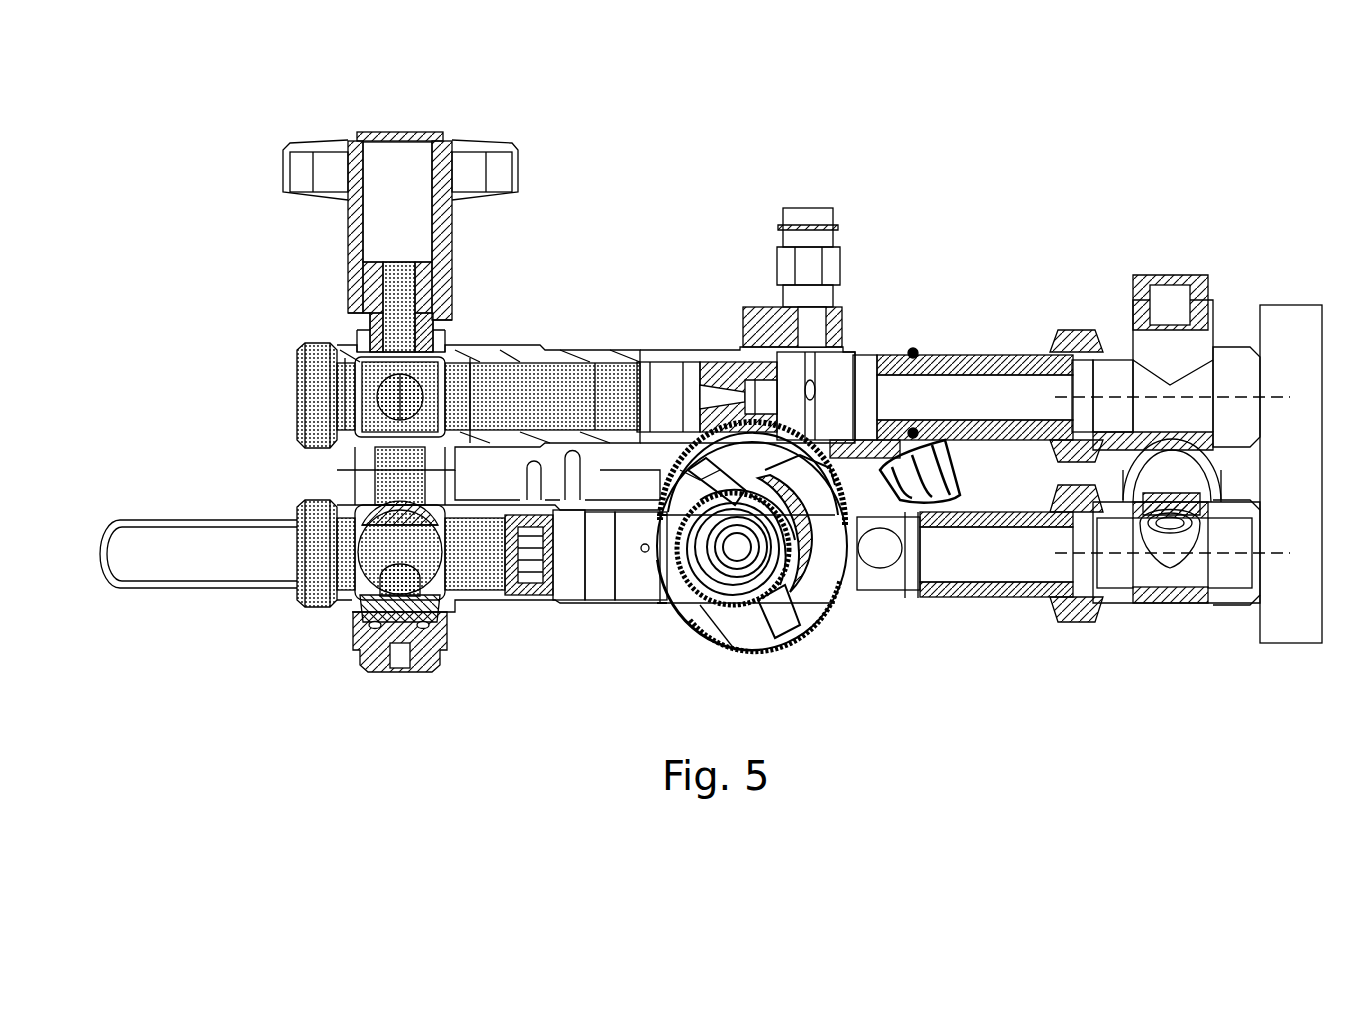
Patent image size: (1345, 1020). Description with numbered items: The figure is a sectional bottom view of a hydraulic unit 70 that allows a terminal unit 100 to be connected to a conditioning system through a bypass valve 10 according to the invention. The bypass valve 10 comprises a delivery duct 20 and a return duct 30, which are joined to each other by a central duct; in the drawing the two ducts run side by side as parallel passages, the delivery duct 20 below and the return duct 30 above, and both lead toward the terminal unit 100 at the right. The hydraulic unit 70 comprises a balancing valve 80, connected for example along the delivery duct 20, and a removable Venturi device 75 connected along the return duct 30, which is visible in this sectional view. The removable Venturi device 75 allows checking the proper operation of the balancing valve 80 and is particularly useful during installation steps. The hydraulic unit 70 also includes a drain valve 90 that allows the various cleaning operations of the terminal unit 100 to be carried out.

The bypass valve 10 is at (250, 298).
The delivery duct 20 is at (315, 610).
The return duct 30 is at (290, 408).
The hydraulic unit 70 is at (962, 320).
The removable Venturi device 75 is at (722, 355).
The balancing valve 80 is at (672, 648).
The drain valve 90 is at (1117, 335).
The terminal unit 100 is at (1293, 615).